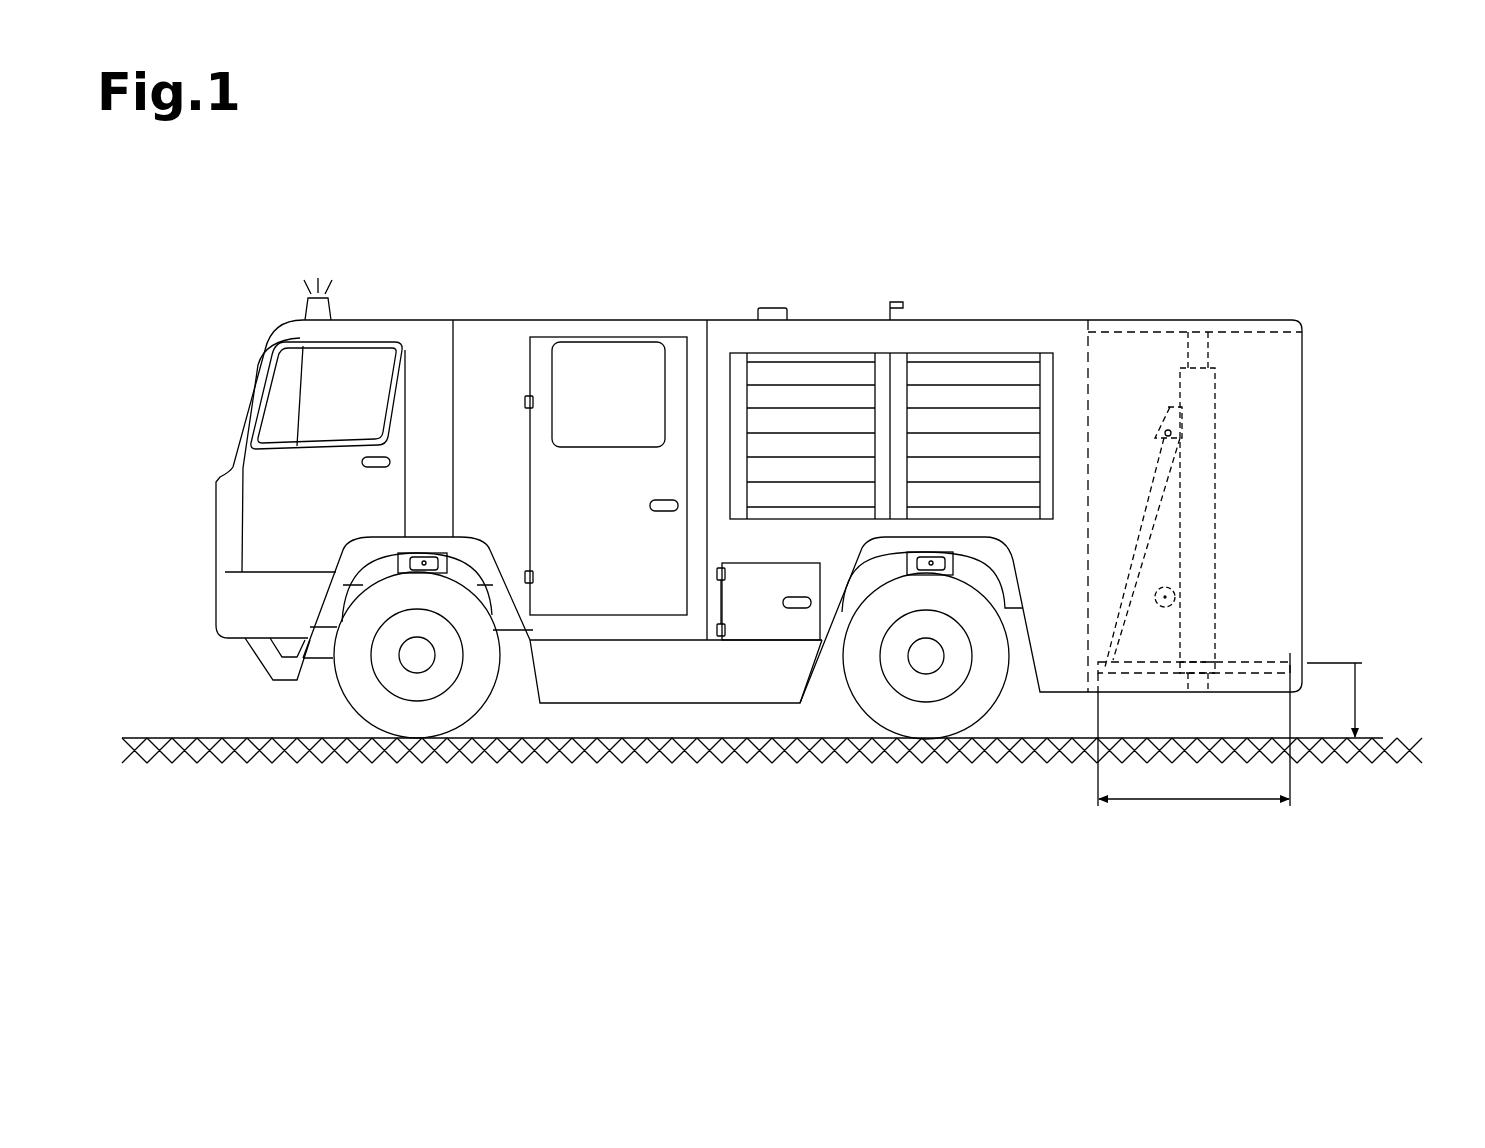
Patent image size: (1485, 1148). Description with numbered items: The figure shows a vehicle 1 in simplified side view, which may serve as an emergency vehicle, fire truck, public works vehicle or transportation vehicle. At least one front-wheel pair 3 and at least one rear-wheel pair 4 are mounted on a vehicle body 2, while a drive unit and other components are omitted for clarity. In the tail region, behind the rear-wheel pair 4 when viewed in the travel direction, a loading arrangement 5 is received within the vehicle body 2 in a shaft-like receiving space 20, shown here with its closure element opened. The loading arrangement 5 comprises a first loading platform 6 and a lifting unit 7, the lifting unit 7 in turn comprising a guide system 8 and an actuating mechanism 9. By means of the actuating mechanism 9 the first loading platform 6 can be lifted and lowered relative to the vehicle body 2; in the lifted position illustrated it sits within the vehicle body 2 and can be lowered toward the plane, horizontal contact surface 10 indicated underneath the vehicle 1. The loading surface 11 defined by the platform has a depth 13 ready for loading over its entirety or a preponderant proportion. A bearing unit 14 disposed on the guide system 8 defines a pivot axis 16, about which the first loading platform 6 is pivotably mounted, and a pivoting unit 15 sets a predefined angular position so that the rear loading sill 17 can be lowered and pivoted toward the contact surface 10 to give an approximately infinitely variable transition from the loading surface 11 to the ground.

The vehicle 1 is at (1092, 210).
The vehicle body 2 is at (485, 392).
The front-wheel pair 3 is at (415, 778).
The rear-wheel pair 4 is at (951, 778).
The loading arrangement 5 is at (1310, 395).
The first loading platform 6 is at (1237, 668).
The lifting unit 7 is at (1226, 362).
The guide system 8 is at (1223, 495).
The actuating mechanism 9 is at (1158, 615).
The contact surface 10 is at (158, 734).
The loading surface 11 is at (1223, 660).
The depth 13 is at (1195, 808).
The bearing unit 14 is at (1203, 648).
The pivoting unit 15 is at (1142, 487).
The pivot axis 16 is at (1307, 684).
The rear loading sill 17 is at (1303, 653).
The receiving space 20 is at (1105, 412).